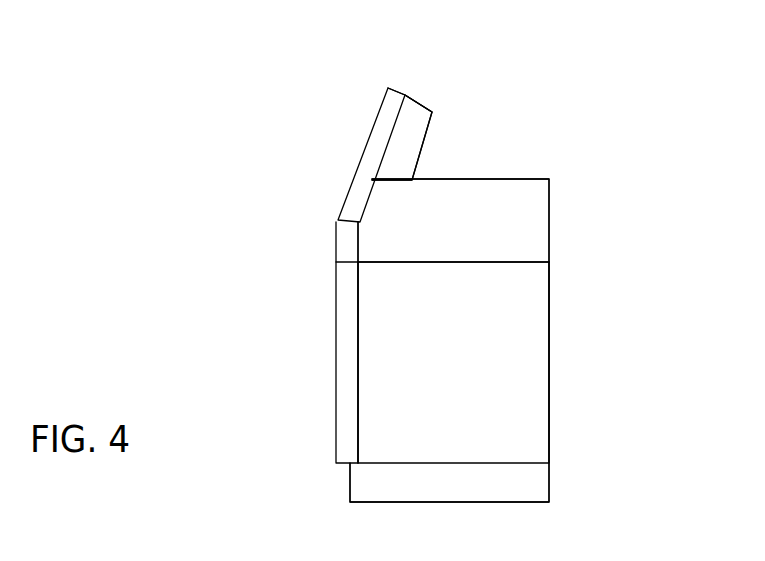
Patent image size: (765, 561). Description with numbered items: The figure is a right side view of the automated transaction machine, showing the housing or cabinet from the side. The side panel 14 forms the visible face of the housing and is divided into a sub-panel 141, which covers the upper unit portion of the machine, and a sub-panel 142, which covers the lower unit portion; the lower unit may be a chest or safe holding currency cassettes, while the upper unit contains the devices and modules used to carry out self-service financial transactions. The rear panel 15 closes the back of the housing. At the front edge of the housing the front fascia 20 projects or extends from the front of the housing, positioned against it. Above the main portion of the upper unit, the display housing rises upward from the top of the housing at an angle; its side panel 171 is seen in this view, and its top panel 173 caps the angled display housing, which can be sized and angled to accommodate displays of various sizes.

The rear panel 15 is at (581, 382).
The side panel 14 is at (449, 382).
The sub-panel 141 is at (527, 220).
The sub-panel 142 is at (525, 290).
The front fascia 20 is at (270, 300).
The side panel 171 is at (408, 142).
The top panel 173 is at (436, 90).